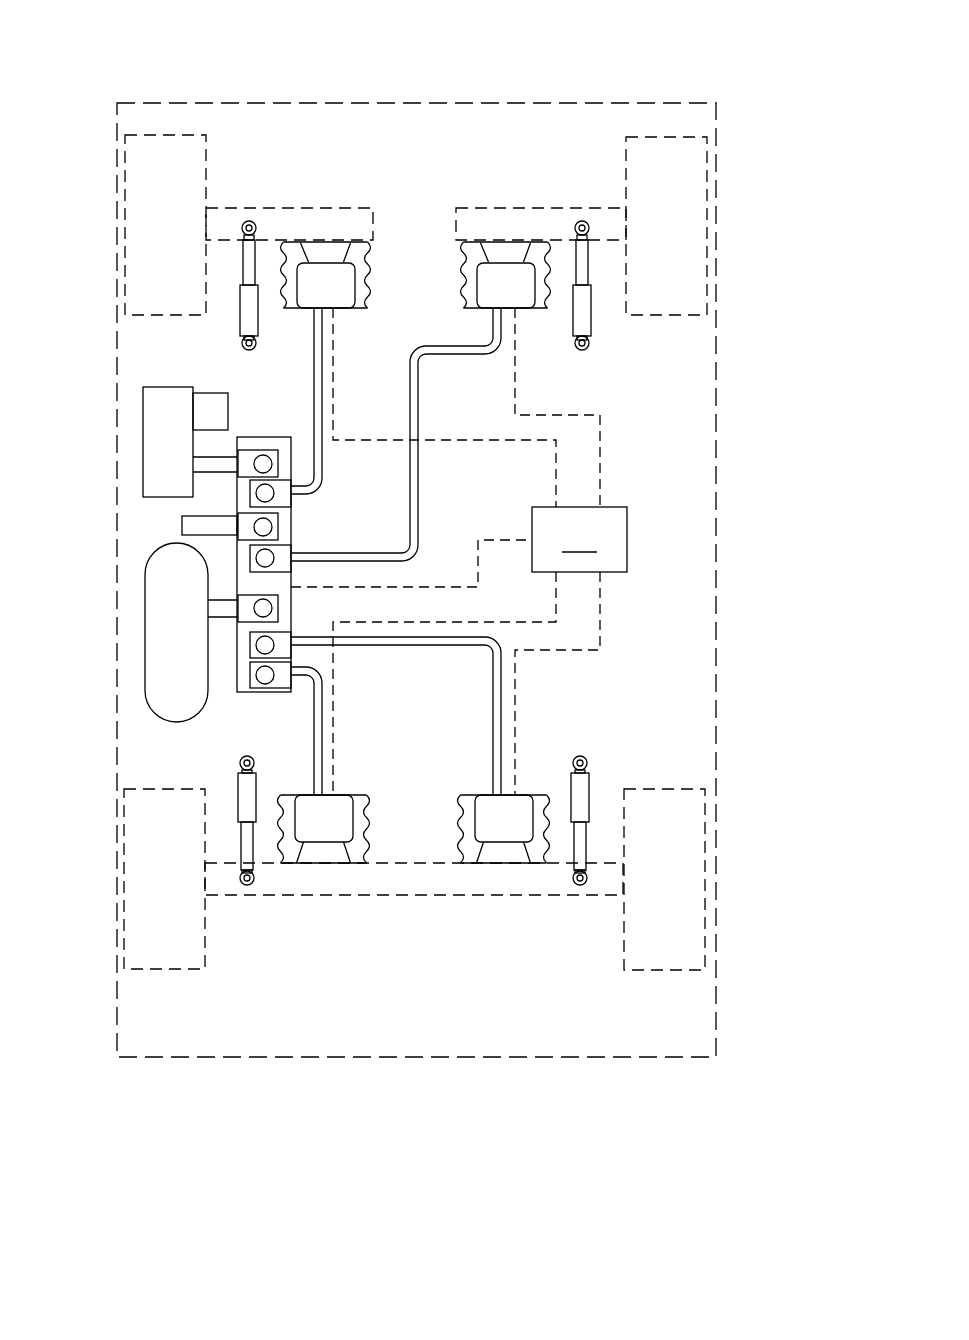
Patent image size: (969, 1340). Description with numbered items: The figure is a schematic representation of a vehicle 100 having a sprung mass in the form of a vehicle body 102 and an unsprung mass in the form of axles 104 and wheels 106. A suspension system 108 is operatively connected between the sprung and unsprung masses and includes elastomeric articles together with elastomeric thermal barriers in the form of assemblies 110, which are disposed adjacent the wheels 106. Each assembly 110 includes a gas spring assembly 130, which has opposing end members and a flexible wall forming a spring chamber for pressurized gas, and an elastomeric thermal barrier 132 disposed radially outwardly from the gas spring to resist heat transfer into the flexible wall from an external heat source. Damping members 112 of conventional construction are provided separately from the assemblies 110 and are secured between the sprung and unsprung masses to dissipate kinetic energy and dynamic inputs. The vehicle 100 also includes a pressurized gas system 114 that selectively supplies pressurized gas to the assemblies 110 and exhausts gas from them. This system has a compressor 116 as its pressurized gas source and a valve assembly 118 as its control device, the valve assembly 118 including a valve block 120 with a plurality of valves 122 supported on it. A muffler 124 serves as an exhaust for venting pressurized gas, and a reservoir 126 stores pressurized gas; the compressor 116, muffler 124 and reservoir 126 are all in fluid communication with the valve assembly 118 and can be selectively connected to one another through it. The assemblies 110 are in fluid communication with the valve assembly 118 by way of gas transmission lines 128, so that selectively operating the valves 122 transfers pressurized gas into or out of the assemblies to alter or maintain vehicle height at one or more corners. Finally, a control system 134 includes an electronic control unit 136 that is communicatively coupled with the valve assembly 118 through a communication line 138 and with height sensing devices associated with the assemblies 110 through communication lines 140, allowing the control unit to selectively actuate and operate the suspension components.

The vehicle 100 is at (730, 154).
The vehicle body 102 is at (596, 103).
The axles 104 is at (265, 217).
The wheels 106 is at (143, 178).
The suspension system 108 is at (685, 367).
The assemblies 110 is at (422, 560).
The damping members 112 is at (240, 325).
The pressurized gas system 114 is at (126, 521).
The compressor 116 is at (160, 407).
The valve assembly 118 is at (263, 436).
The valve block 120 is at (243, 693).
The valves 122 is at (273, 552).
The muffler 124 is at (182, 528).
The reservoir 126 is at (150, 608).
The gas transmission lines 128 is at (407, 496).
The gas spring assembly 130 is at (323, 272).
The elastomeric thermal barrier 132 is at (290, 253).
The control system 134 is at (622, 488).
The electronic control unit 136 is at (579, 539).
The communication line 138 is at (445, 587).
The communication lines 140 is at (467, 440).